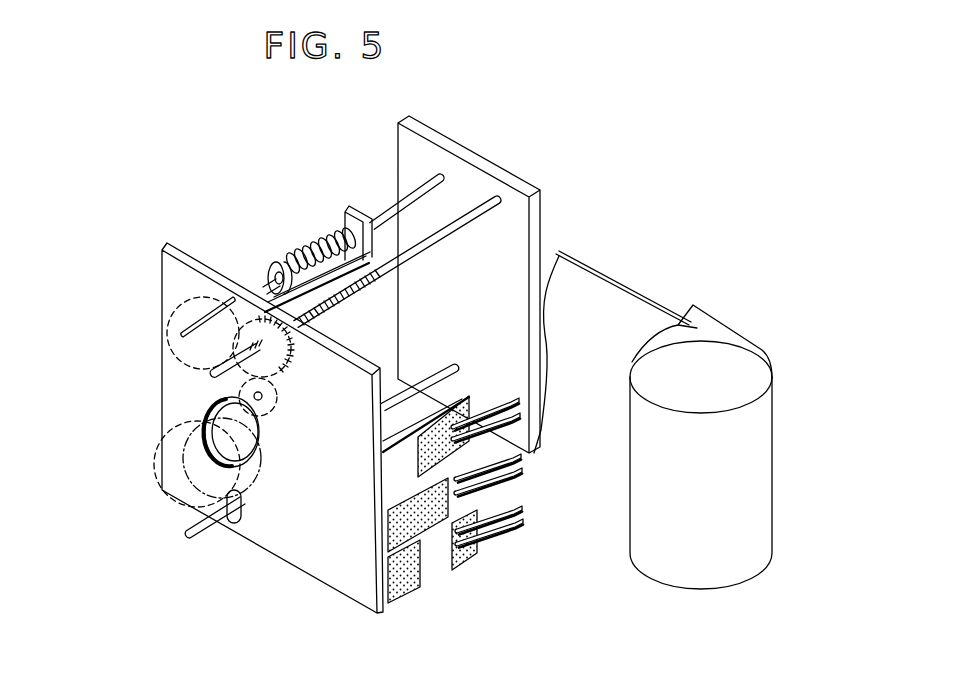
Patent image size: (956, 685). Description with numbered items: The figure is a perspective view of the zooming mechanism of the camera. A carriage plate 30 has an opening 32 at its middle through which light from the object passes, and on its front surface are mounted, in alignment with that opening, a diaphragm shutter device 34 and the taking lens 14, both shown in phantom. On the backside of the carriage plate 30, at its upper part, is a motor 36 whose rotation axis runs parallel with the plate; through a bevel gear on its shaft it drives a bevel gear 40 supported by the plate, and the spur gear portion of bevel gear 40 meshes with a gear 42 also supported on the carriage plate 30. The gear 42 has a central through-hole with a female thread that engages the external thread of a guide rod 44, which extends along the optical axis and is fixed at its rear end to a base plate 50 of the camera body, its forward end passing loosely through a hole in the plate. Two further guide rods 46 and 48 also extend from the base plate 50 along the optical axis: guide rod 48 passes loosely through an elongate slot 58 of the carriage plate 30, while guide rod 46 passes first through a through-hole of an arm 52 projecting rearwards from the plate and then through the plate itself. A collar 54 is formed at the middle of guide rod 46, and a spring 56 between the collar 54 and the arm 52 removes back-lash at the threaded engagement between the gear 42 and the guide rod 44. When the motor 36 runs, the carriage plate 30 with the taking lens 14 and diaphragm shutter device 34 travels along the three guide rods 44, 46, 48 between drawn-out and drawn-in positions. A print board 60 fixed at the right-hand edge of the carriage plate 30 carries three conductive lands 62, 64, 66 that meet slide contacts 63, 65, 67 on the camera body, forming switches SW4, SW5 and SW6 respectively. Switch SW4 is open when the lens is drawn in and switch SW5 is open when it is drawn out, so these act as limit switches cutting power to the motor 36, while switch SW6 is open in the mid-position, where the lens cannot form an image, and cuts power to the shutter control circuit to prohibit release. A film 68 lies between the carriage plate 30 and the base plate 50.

The taking lens 14 is at (158, 449).
The carriage plate 30 is at (163, 262).
The opening 32 is at (268, 436).
The diaphragm shutter device 34 is at (270, 479).
The motor 36 is at (172, 303).
The bevel gear 40 is at (283, 408).
The gear 42 is at (294, 362).
The guide rod 44 is at (443, 235).
The guide rod 46 is at (390, 205).
The guide rod 48 is at (436, 374).
The base plate 50 is at (457, 137).
The arm 52 is at (347, 209).
The collar 54 is at (275, 266).
The spring 56 is at (318, 245).
The elongate slot 58 is at (242, 512).
The print board 60 is at (461, 393).
The conductive land 62 is at (420, 458).
The slide contact 63 is at (522, 417).
The conductive land 64 is at (393, 533).
The slide contact 65 is at (523, 473).
The conductive land 66 is at (421, 584).
The slide contact 67 is at (524, 525).
The film 68 is at (633, 293).
The switch SW4 is at (500, 406).
The switch SW5 is at (501, 459).
The switch SW6 is at (502, 512).